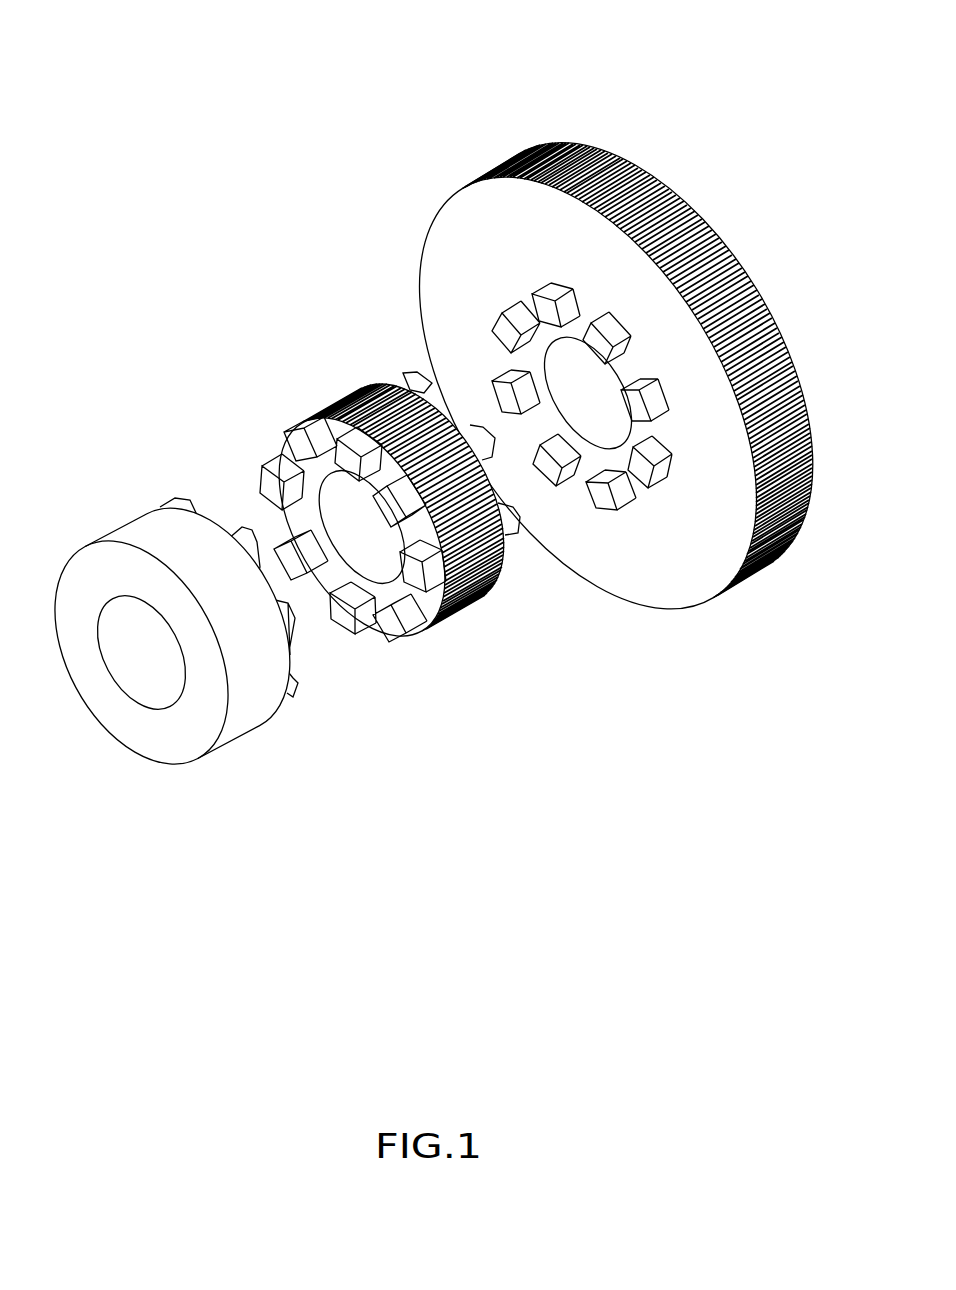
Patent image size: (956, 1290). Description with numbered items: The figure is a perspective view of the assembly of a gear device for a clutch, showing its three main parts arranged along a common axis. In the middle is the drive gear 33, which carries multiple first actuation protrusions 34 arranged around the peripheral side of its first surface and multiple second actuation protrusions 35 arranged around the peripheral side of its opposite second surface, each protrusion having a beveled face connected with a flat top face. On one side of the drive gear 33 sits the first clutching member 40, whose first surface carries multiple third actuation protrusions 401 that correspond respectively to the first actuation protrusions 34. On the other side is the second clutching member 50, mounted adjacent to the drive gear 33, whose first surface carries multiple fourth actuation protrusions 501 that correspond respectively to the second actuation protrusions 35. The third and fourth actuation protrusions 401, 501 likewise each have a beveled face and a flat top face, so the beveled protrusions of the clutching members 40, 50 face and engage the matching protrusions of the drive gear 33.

The second clutching member 50 is at (573, 238).
The fourth actuation protrusions 501 is at (620, 322).
The drive gear 33 is at (382, 425).
The second actuation protrusions 35 is at (422, 385).
The first actuation protrusions 34 is at (275, 470).
The first clutching member 40 is at (190, 737).
The third actuation protrusions 401 is at (292, 645).